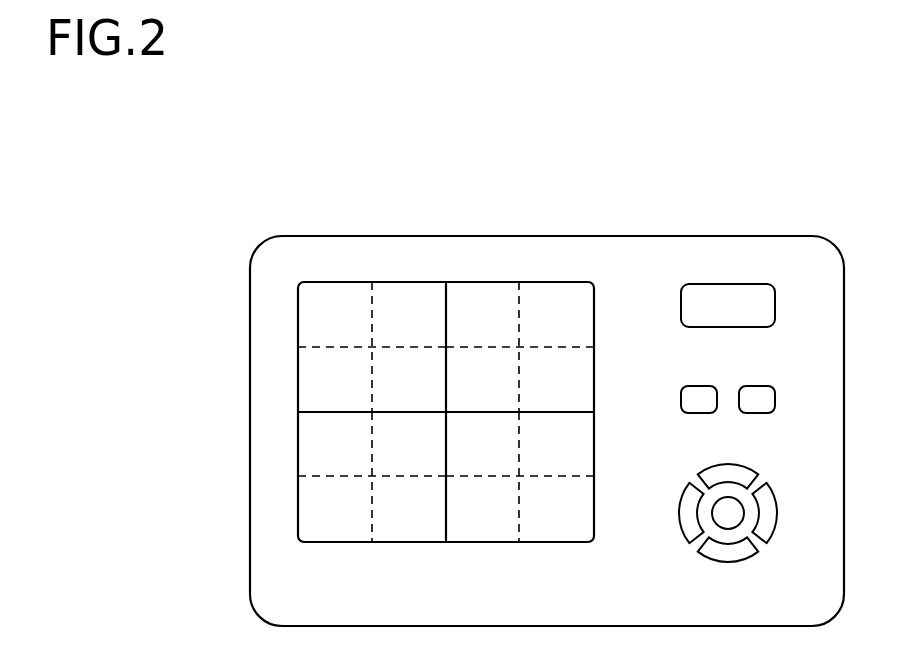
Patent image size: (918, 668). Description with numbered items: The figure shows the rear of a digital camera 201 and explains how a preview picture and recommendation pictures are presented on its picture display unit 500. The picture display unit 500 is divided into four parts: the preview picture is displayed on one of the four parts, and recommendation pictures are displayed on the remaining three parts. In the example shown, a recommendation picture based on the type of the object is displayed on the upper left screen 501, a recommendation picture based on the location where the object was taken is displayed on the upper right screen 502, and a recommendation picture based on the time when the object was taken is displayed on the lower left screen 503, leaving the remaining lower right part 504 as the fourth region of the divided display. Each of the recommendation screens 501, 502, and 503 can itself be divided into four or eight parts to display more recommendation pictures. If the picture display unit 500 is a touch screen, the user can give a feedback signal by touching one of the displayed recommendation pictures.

The digital camera 201 is at (368, 236).
The picture display unit 500 is at (377, 412).
The upper left screen 501 is at (372, 347).
The upper right screen 502 is at (520, 347).
The lower left screen 503 is at (372, 477).
The fourth display region 504 is at (520, 477).